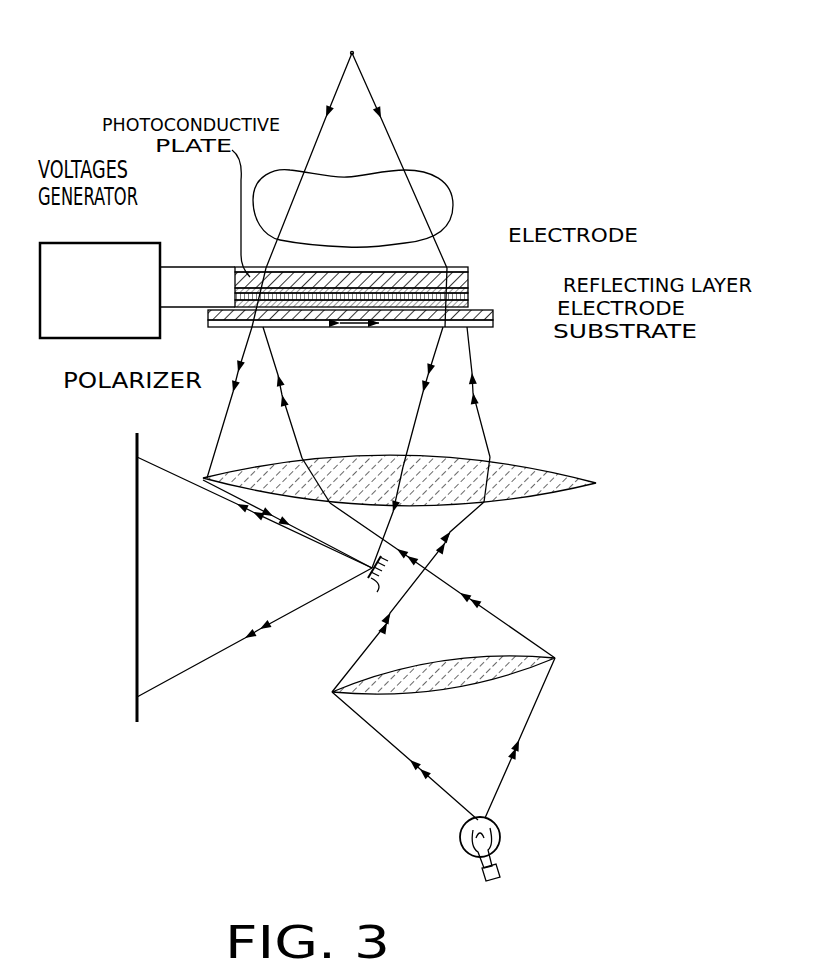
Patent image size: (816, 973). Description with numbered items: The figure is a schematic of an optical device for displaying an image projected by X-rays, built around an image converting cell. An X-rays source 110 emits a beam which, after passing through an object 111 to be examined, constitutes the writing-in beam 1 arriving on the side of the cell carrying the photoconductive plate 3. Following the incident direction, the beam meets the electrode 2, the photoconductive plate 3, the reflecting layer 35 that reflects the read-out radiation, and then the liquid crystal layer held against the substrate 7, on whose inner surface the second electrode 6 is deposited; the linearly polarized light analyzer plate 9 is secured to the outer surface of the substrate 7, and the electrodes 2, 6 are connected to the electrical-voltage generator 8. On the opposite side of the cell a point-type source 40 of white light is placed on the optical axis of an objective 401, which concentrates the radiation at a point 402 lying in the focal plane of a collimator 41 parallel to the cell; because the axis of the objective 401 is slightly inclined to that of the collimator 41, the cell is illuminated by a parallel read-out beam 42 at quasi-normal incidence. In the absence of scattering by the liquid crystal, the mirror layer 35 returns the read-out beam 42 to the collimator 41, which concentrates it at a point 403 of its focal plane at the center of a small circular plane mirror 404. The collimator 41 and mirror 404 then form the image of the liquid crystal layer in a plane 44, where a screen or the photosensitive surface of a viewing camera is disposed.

The X-rays source 110 is at (352, 53).
The object 111 is at (412, 178).
The writing-in beam 1 is at (447, 263).
The electrode 2 is at (468, 269).
The photoconductive plate 3 is at (468, 288).
The reflecting layer 35 is at (468, 296).
The second electrode 6 is at (468, 303).
The substrate 7 is at (493, 318).
The electrical-voltage generator 8 is at (92, 268).
The linearly polarized light analyzer plate 9 is at (212, 328).
The read-out beam 42 is at (463, 355).
The collimator 41 is at (522, 452).
The point 402 is at (432, 567).
The objective 401 is at (500, 660).
The small circular plane mirror 404 is at (377, 590).
The point 403 is at (368, 570).
The plane 44 is at (137, 708).
The point-type source of white light 40 is at (496, 826).